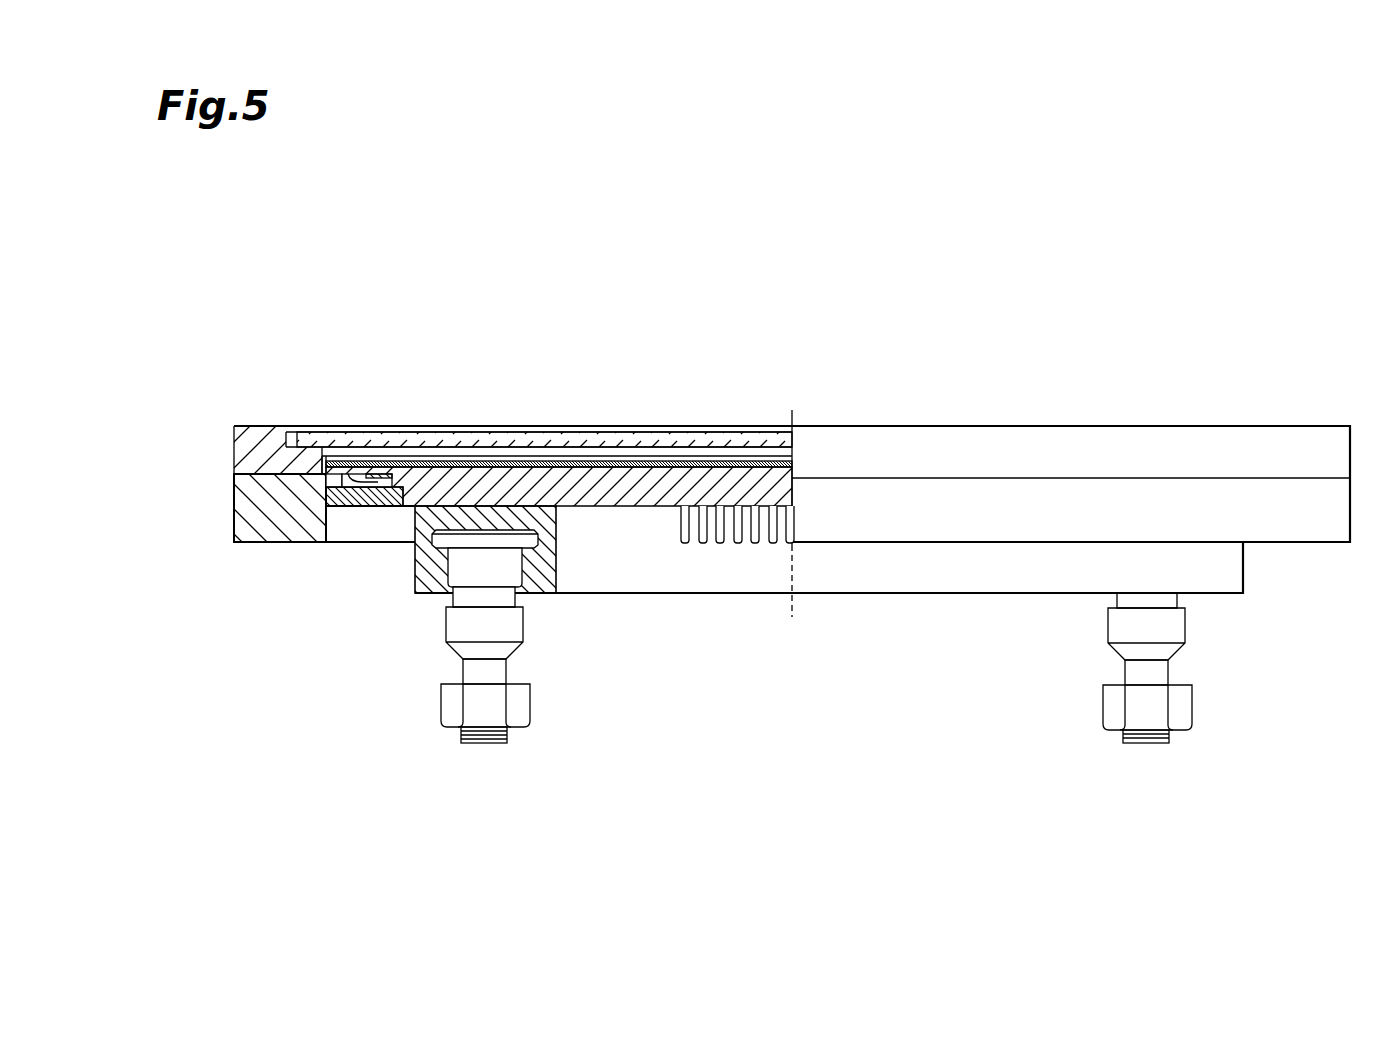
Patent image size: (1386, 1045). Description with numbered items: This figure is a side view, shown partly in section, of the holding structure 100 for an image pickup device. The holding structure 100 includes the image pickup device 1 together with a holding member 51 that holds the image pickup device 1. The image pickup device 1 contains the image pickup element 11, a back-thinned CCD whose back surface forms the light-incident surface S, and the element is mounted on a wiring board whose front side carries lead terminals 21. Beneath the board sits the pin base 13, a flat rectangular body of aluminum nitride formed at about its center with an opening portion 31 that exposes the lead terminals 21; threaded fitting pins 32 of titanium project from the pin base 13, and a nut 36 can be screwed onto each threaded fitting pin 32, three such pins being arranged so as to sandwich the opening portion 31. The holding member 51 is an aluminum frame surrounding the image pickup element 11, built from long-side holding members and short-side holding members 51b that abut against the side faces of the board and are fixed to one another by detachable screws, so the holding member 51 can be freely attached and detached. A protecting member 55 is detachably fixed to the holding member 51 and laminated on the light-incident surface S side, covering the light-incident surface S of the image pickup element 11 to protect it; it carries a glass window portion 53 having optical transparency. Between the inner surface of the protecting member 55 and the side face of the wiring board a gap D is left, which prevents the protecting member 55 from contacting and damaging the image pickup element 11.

The holding structure for an image pickup device 100 is at (740, 471).
The protecting member 55 is at (1261, 419).
The pin base 13 is at (698, 601).
The image pickup device 1 is at (459, 522).
The glass window portion 53 is at (403, 443).
The gap D is at (326, 451).
The holding member 51 is at (232, 502).
The short-side holding member 51b is at (233, 538).
The image pickup element 11 is at (518, 462).
The light-incident surface S is at (661, 457).
The opening portion 31 is at (557, 548).
The lead terminal 21 is at (738, 536).
The threaded fitting pin 32 is at (510, 627).
The nut 36 is at (518, 708).